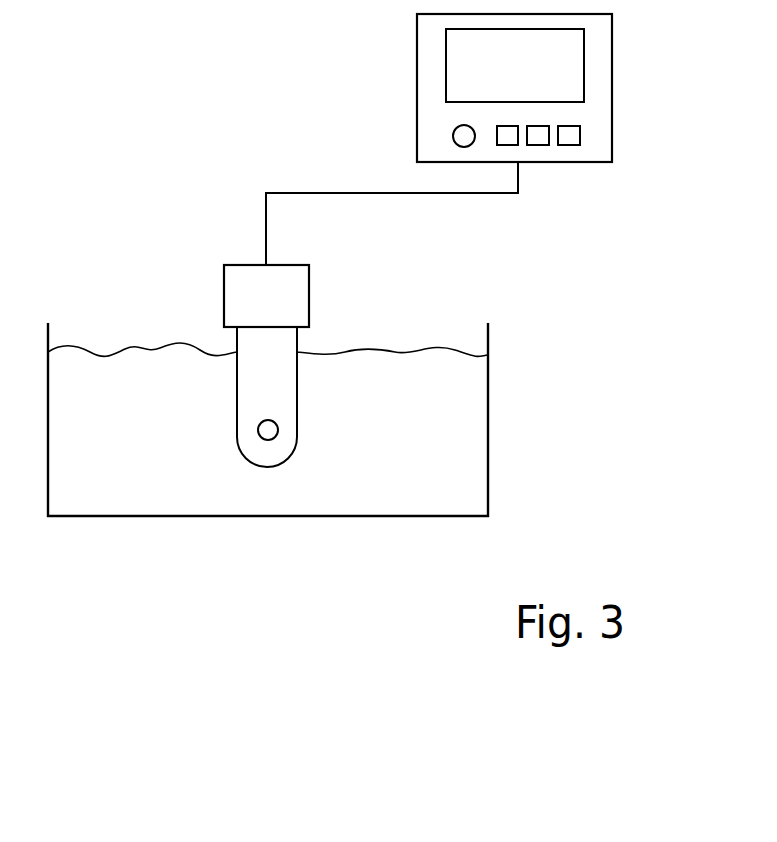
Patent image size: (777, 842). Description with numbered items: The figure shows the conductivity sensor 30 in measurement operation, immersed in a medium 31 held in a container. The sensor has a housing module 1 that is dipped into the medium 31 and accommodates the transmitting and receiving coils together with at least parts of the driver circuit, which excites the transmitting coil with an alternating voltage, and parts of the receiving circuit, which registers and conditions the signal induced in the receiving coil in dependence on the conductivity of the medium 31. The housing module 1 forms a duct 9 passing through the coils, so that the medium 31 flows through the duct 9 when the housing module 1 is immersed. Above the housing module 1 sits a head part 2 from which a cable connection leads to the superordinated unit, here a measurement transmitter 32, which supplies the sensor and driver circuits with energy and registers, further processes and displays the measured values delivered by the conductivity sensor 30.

The conductivity sensor 30 is at (166, 233).
The measurement transmitter 32 is at (597, 72).
The probe head 2 is at (297, 300).
The housing module 1 is at (263, 455).
The duct 9 is at (258, 430).
The medium 31 is at (465, 448).